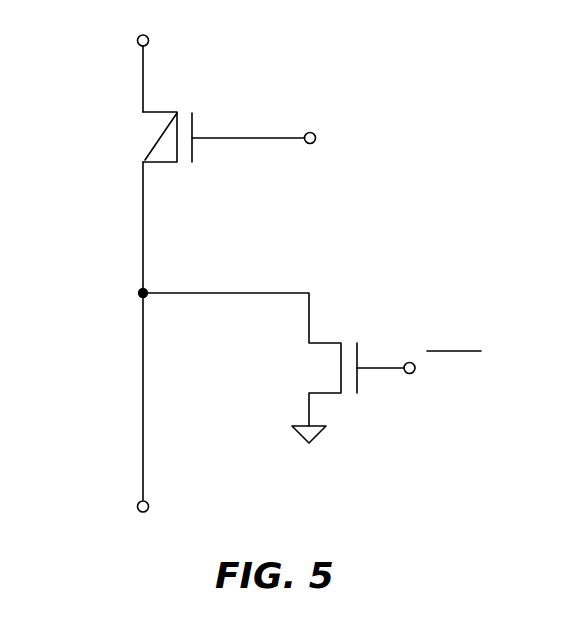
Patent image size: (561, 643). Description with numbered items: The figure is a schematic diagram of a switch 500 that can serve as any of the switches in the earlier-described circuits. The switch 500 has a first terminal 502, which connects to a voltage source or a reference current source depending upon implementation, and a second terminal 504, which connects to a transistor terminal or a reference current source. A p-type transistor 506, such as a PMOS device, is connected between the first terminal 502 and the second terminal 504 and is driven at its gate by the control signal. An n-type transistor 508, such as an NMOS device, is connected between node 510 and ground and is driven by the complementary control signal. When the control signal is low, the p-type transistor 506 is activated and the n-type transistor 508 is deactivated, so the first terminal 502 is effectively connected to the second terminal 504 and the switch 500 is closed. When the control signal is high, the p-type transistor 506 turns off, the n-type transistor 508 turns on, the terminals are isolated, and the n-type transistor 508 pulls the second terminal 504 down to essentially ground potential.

The switch 500 is at (262, 262).
The first terminal 502 is at (138, 41).
The second terminal 504 is at (138, 507).
The p-type transistor 506 is at (148, 133).
The n-type transistor 508 is at (340, 400).
The node 510 is at (138, 293).